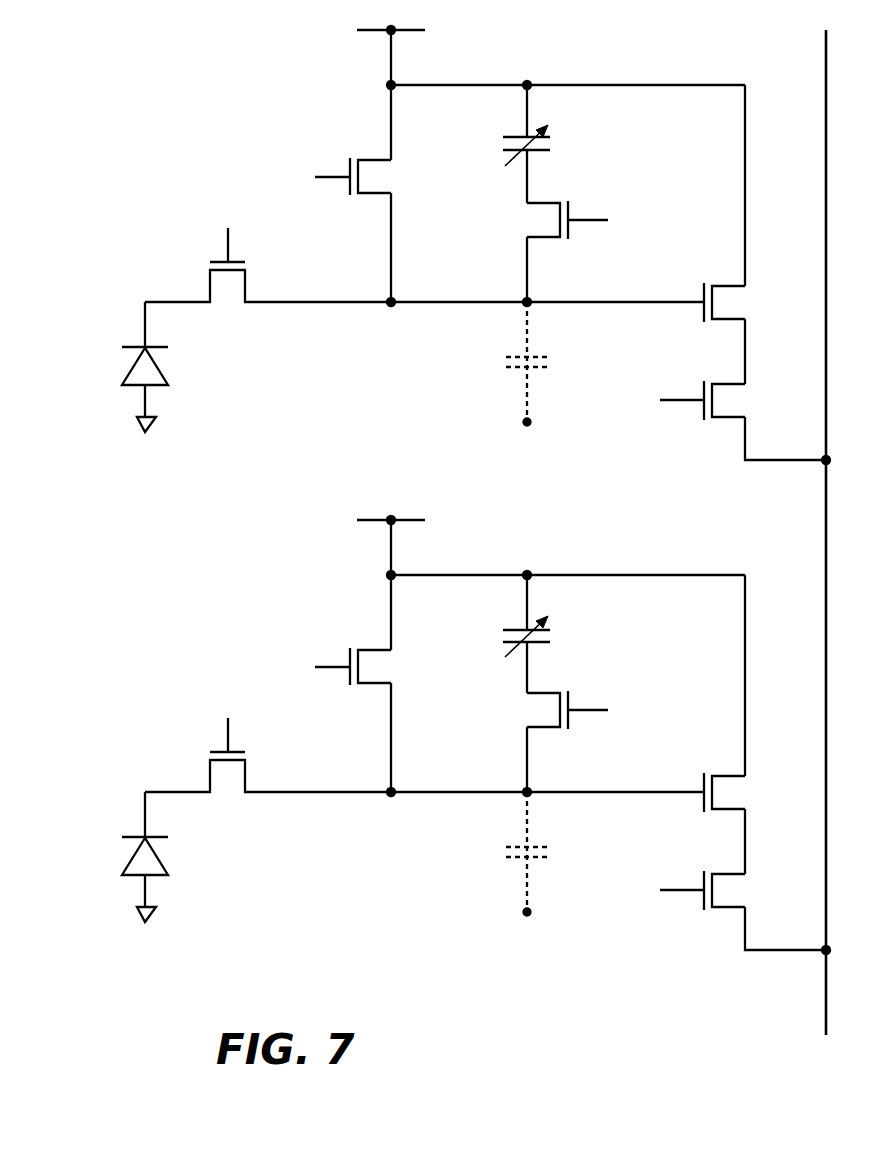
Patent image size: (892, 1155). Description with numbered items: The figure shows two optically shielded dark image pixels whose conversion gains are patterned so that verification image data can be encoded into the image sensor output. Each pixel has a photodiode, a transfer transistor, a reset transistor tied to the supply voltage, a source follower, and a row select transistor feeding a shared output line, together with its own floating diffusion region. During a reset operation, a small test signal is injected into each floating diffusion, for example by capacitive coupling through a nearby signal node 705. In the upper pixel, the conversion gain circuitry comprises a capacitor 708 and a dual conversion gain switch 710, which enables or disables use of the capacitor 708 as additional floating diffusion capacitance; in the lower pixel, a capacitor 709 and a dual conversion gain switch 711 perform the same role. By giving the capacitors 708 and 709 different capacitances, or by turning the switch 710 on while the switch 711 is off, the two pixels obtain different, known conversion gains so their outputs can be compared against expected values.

The signal node 705 is at (524, 420).
The capacitor 708 is at (552, 143).
The capacitor 709 is at (552, 634).
The DCG switch 710 is at (550, 238).
The DCG switch 711 is at (550, 728).